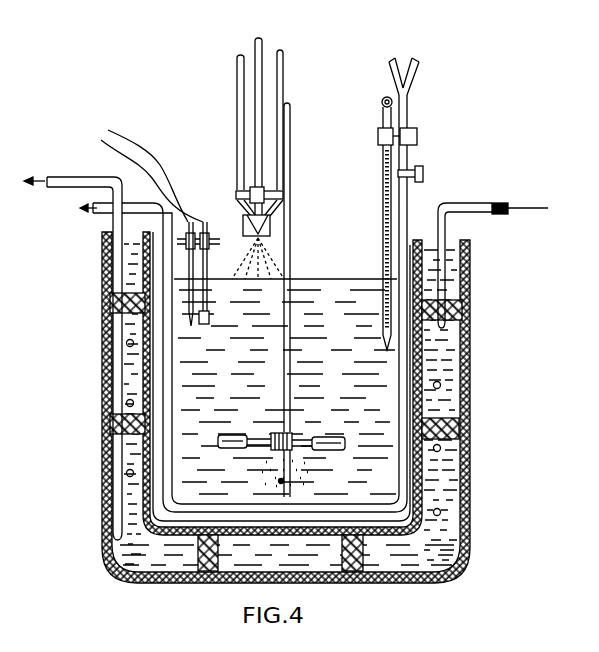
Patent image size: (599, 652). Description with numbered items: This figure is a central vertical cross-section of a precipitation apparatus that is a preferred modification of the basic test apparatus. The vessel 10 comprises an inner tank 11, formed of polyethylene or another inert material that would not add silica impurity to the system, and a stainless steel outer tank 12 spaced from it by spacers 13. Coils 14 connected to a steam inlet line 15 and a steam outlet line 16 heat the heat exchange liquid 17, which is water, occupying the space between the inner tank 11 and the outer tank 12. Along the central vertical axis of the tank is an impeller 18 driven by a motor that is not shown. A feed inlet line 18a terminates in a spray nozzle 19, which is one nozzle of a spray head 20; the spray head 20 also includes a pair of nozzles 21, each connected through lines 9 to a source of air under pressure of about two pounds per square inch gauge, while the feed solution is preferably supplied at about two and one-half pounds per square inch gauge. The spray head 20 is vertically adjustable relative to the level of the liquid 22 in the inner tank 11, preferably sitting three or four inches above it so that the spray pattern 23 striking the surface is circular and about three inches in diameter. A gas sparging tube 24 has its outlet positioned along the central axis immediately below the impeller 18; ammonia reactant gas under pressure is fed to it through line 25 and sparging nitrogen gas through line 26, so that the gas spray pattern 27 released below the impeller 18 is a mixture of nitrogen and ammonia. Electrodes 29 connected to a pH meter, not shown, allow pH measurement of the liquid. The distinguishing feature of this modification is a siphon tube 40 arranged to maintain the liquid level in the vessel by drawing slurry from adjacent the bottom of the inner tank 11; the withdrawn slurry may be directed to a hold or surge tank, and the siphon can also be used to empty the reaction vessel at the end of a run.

The lines 9 is at (237, 80).
The vessel 10 is at (291, 407).
The inner tank 11 is at (157, 358).
The outer tank 12 is at (108, 293).
The spacers 13 is at (107, 298).
The coils 14 is at (127, 476).
The steam inlet line 15 is at (493, 215).
The steam outlet line 16 is at (70, 187).
The heat exchange liquid 17 is at (450, 485).
The impeller 18 is at (292, 437).
The feed inlet line 18a is at (262, 58).
The spray nozzle 19 is at (278, 217).
The spray head 20 is at (267, 237).
The nozzles 21 is at (282, 197).
The liquid 22 is at (340, 279).
The spray pattern 23 is at (270, 261).
The gas sparging tube 24 is at (400, 387).
The line 25 is at (414, 78).
The line 26 is at (391, 77).
The gas spray pattern 27 is at (300, 478).
The electrodes 29 is at (208, 298).
The siphon tube 40 is at (93, 218).